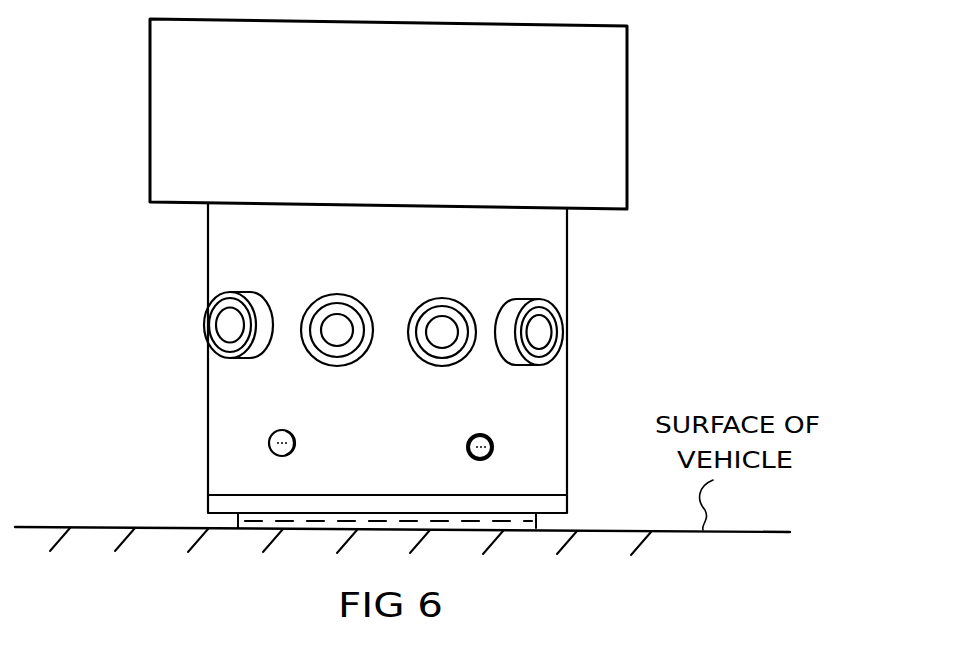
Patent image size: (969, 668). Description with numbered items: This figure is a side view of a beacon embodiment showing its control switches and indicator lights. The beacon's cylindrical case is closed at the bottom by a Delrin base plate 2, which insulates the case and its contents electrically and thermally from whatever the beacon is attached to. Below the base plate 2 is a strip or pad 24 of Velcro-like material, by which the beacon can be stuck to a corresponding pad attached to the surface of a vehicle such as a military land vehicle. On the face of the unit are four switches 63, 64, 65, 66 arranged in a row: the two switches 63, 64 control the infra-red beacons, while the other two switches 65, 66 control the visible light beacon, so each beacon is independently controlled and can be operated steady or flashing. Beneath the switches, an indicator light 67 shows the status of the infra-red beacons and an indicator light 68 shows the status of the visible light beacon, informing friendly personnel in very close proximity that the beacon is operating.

The base plate 2 is at (568, 505).
The strip or pad 24 is at (236, 519).
The switch 63 is at (215, 301).
The switch 64 is at (318, 301).
The switch 65 is at (430, 301).
The switch 66 is at (553, 300).
The indicator light 67 is at (275, 455).
The indicator light 68 is at (489, 459).